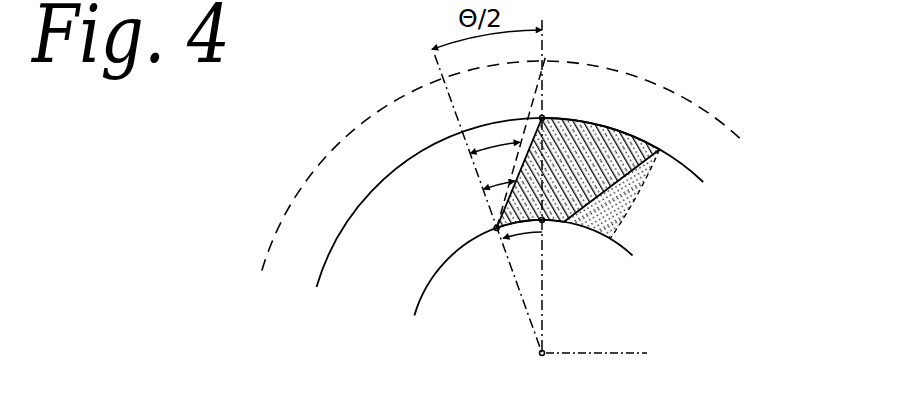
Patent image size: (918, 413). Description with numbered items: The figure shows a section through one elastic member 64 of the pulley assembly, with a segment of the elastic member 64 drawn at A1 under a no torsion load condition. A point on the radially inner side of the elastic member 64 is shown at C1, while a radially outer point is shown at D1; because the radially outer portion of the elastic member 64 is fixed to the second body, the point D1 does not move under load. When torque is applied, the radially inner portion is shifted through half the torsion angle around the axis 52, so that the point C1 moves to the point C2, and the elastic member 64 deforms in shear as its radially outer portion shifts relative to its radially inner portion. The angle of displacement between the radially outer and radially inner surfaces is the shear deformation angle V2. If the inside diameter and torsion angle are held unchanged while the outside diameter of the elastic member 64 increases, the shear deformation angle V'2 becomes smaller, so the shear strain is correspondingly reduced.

The first axis 52 is at (647, 353).
The elastic member 64 is at (617, 215).
The segment of the elastic member A1 is at (637, 192).
The radially outer point D1 is at (560, 107).
The radially inner point C1 is at (560, 239).
The shifted radially inner point C2 is at (503, 249).
The shear deformation angle V2 is at (482, 184).
The shear deformation angle V'2 is at (495, 120).